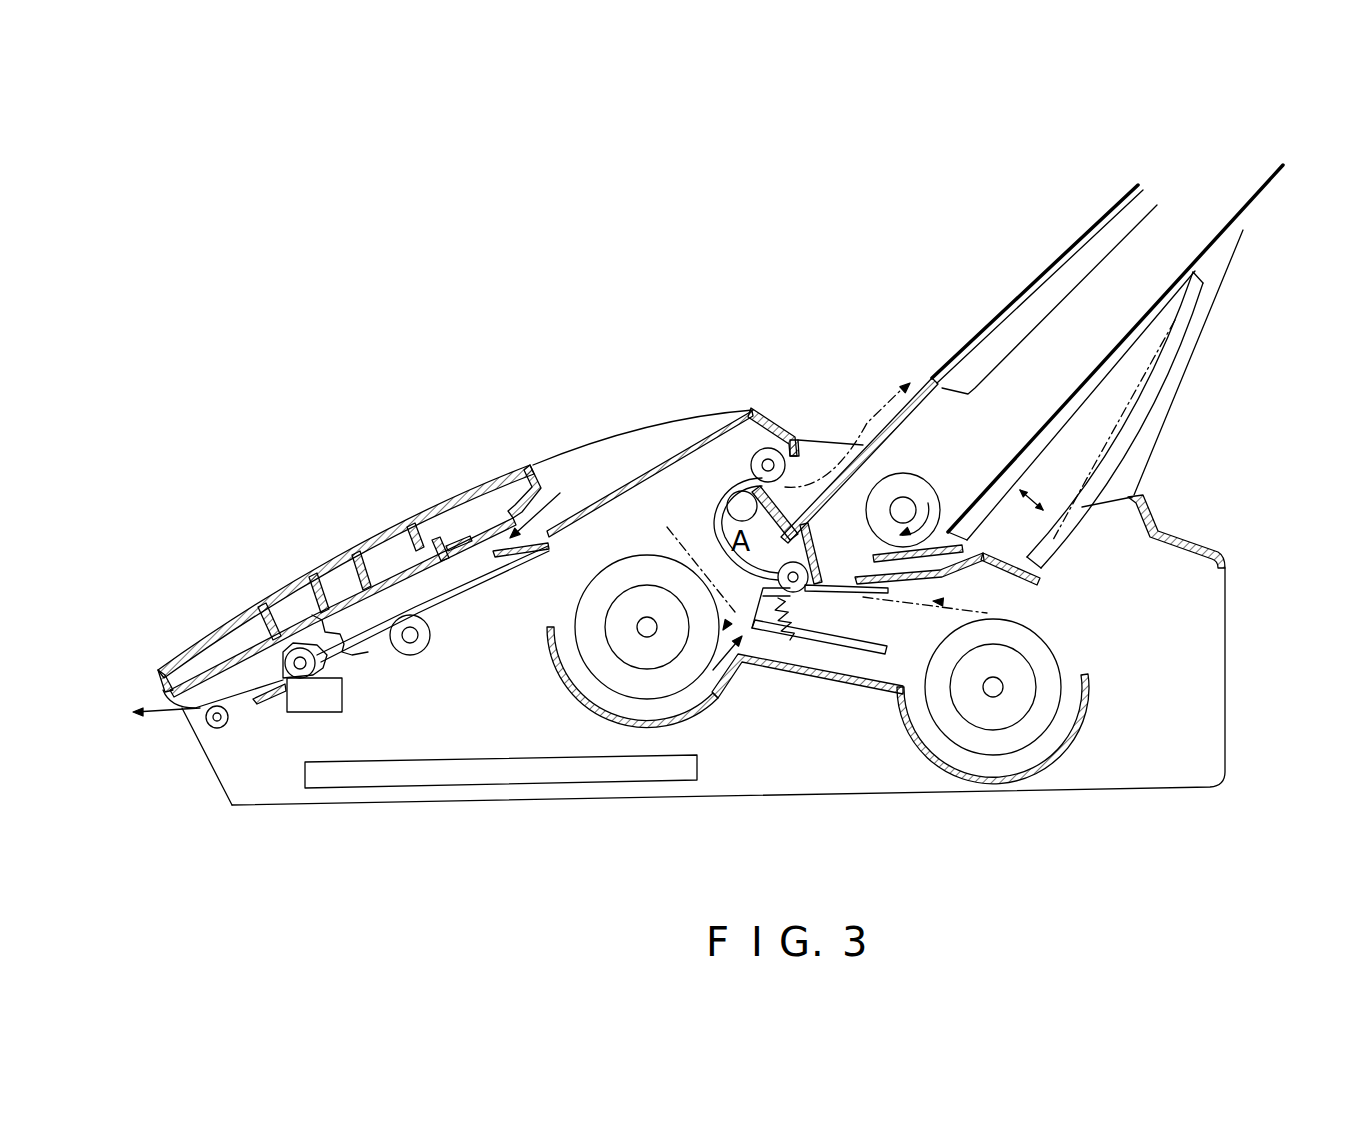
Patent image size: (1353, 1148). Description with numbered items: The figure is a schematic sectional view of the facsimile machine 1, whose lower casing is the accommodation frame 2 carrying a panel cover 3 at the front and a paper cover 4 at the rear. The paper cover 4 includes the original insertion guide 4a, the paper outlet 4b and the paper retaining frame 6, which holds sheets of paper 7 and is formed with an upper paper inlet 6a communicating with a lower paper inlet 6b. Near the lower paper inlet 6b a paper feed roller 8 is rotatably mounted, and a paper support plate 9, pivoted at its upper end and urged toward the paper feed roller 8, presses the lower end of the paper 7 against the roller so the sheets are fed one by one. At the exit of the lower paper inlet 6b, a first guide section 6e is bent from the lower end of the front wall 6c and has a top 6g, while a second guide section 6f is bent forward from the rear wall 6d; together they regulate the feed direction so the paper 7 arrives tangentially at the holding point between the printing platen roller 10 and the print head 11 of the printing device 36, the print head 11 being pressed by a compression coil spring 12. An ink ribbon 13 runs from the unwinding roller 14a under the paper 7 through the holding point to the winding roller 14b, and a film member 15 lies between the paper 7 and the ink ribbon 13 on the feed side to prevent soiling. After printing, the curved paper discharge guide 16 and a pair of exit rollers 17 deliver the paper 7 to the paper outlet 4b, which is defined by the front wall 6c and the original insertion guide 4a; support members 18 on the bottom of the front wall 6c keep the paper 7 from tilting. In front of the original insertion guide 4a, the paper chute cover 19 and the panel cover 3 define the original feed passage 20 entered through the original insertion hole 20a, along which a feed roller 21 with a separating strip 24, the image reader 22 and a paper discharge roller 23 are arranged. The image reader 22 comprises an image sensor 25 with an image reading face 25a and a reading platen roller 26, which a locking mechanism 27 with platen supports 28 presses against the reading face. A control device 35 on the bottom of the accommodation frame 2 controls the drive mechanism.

The facsimile machine 1 is at (1252, 551).
The accommodation frame 2 is at (1228, 723).
The panel cover 3 is at (481, 488).
The paper cover 4 is at (1197, 540).
The original insertion guide 4a is at (652, 460).
The paper outlet 4b is at (853, 443).
The paper retaining frame 6 is at (1228, 272).
The upper paper inlet 6a is at (1152, 210).
The lower paper inlet 6b is at (877, 415).
The front wall 6c is at (928, 375).
The rear wall 6d is at (1067, 530).
The first guide section 6e is at (821, 560).
The second guide section 6f is at (980, 568).
The top 6g is at (848, 684).
The paper 7 is at (1107, 212).
The paper feed roller 8 is at (930, 483).
The paper support plate 9 is at (1103, 375).
The printing platen roller 10 is at (802, 636).
The print head 11 is at (797, 630).
The compression coil spring 12 is at (768, 634).
The ink ribbon 13 is at (702, 562).
The unwinding roller 14a is at (1022, 677).
The winding roller 14b is at (646, 625).
The film member 15 is at (886, 600).
The paper discharge guide 16 is at (714, 508).
The exit rollers 17 is at (770, 447).
The support members 18 is at (800, 438).
The paper chute cover 19 is at (466, 576).
The original feed passage 20 is at (500, 552).
The original insertion hole 20a is at (565, 487).
The feed roller 21 is at (430, 652).
The image reader 22 is at (277, 720).
The paper discharge roller 23 is at (218, 728).
The separating strip 24 is at (383, 572).
The image sensor 25 is at (340, 696).
The image reading face 25a is at (353, 672).
The reading platen roller 26 is at (303, 682).
The locking mechanism 27 is at (292, 628).
The platen supports 28 is at (280, 618).
The control device 35 is at (650, 774).
The printing device 36 is at (713, 698).